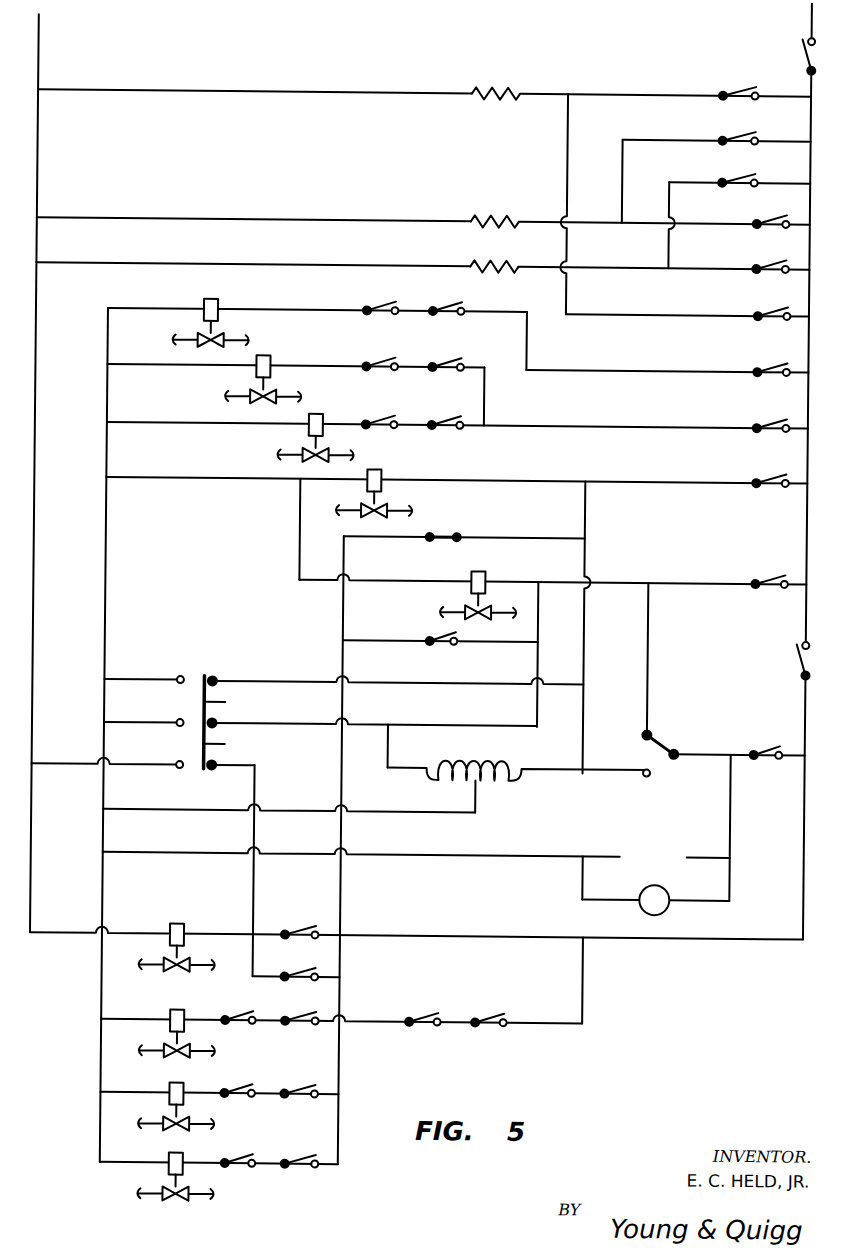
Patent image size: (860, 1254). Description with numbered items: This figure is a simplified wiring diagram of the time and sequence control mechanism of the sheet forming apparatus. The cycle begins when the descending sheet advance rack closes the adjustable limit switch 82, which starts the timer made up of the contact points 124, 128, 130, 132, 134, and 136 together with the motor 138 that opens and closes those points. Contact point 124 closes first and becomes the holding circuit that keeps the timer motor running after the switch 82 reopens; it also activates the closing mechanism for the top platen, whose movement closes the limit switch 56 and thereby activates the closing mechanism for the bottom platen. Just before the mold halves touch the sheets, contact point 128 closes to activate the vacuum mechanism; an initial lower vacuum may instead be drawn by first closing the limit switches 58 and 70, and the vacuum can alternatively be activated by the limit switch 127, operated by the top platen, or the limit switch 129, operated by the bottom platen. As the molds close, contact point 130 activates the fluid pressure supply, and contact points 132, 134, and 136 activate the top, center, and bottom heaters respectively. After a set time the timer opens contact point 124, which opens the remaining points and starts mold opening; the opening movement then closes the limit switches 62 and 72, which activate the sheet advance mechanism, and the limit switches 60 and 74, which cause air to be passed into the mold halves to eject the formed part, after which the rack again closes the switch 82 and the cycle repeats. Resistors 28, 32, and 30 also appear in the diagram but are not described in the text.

The resistor 28 is at (503, 89).
The resistor 32 is at (494, 217).
The resistor 30 is at (501, 264).
The contact point 136 is at (763, 220).
The contact point 134 is at (762, 260).
The contact point 132 is at (762, 307).
The contact point 130 is at (764, 365).
The contact point 128 is at (768, 423).
The contact point 124 is at (772, 578).
The limit switch 129 is at (384, 414).
The limit switch 127 is at (445, 415).
The limit switch 56 is at (438, 648).
The adjustable limit switch 82 is at (773, 747).
The limit switch 62 is at (303, 931).
The limit switch 72 is at (305, 971).
The limit switch 70 is at (247, 1015).
The limit switch 58 is at (306, 1014).
The limit switch 74 is at (247, 1090).
The limit switch 60 is at (253, 1160).
The motor 138 is at (673, 900).